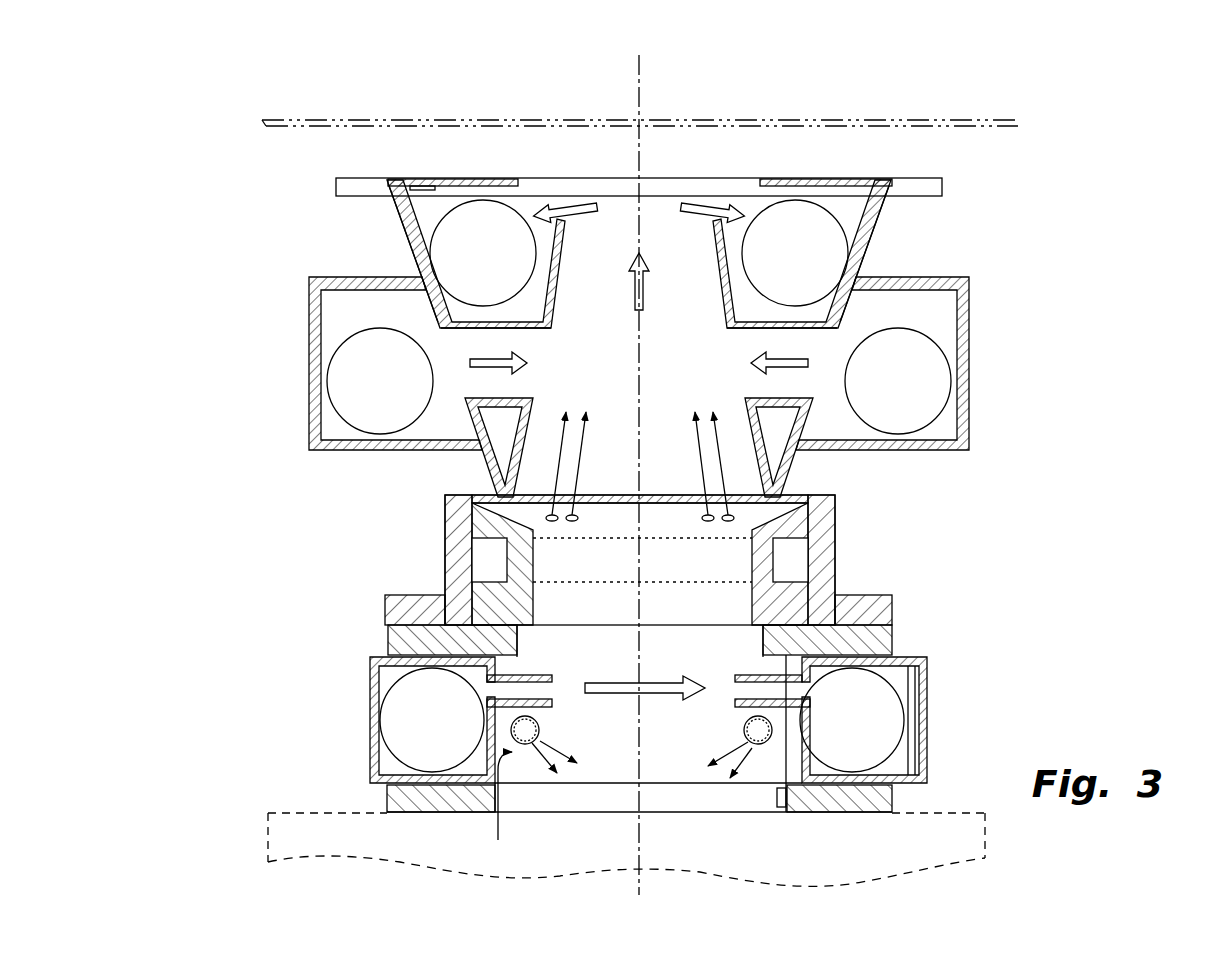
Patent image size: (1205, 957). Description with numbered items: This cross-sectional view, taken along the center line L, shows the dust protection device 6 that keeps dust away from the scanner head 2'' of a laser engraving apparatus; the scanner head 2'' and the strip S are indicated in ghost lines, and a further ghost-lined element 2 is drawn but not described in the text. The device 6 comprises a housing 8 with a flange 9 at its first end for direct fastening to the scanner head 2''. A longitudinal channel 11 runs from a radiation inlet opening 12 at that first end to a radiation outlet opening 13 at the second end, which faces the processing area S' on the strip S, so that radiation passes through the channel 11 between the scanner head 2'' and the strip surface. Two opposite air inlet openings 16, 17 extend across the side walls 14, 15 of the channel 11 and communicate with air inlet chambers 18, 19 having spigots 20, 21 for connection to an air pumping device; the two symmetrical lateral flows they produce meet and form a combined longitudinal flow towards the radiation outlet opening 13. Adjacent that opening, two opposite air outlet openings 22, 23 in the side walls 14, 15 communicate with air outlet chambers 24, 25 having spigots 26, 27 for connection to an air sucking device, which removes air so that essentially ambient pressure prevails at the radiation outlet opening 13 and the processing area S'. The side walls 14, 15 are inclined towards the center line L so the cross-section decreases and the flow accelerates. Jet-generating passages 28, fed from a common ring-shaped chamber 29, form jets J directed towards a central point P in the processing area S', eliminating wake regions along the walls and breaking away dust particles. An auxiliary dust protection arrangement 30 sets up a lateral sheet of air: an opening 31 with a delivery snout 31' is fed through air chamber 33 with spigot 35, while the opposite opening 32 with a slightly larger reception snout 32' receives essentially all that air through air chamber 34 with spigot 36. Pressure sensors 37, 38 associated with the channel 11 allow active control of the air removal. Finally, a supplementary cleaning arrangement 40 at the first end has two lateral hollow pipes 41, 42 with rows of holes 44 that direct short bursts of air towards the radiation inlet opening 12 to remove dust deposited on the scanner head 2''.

The conveyor 2 is at (580, 878).
The scanner head 2'' is at (592, 837).
The dust protection device 6 is at (246, 222).
The housing 8 is at (497, 477).
The flange 9 is at (393, 610).
The longitudinal channel 11 is at (626, 318).
The radiation inlet opening 12 is at (597, 815).
The radiation outlet opening 13 is at (713, 186).
The side wall 14 is at (554, 258).
The side wall 15 is at (728, 268).
The air inlet opening 16 is at (510, 345).
The air inlet opening 17 is at (765, 343).
The air inlet chamber 18 is at (395, 363).
The air inlet chamber 19 is at (882, 363).
The spigot 20 is at (322, 383).
The spigot 21 is at (940, 328).
The air outlet opening 22 is at (523, 203).
The air outlet opening 23 is at (752, 202).
The air outlet chamber 24 is at (430, 211).
The air outlet chamber 25 is at (853, 211).
The spigot 26 is at (422, 238).
The spigot 27 is at (850, 227).
The jet-generating passage 28 is at (552, 522).
The ring-shaped chamber 29 is at (490, 567).
The auxiliary dust protection arrangement 30 is at (368, 680).
The opening 31 is at (525, 665).
The delivery snout 31' is at (551, 673).
The opening 32 is at (763, 665).
The reception snout 32' is at (741, 675).
The air chamber 33 is at (385, 657).
The air chamber 34 is at (893, 675).
The spigot 35 is at (388, 688).
The spigot 36 is at (907, 687).
The pressure sensor 37 is at (423, 178).
The pressure sensor 38 is at (775, 808).
The supplementary cleaning arrangement 40 is at (498, 840).
The hollow pipe 41 is at (536, 719).
The hollow pipe 42 is at (748, 722).
The holes 44 is at (536, 741).
The central point P is at (630, 124).
The center line L is at (645, 145).
The strip S is at (640, 99).
The processing area S' is at (701, 91).
The jets J is at (690, 450).